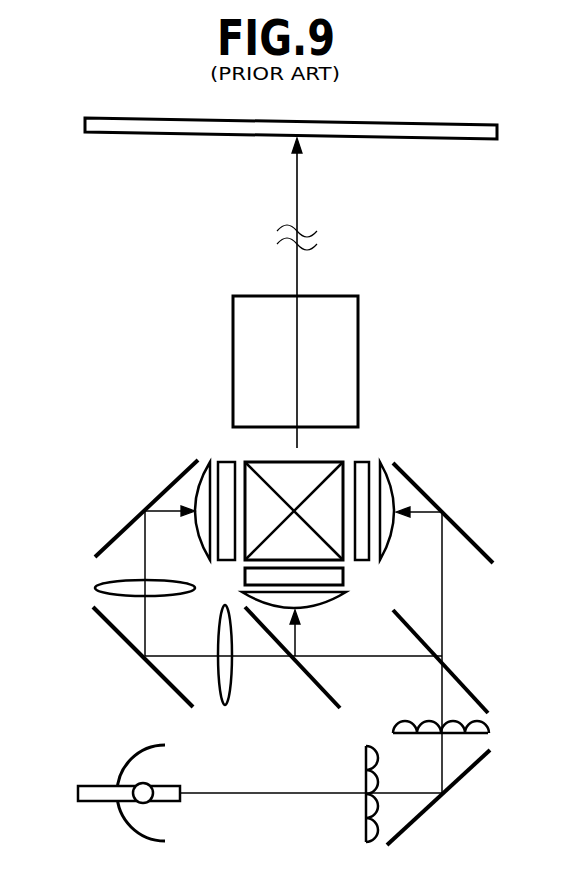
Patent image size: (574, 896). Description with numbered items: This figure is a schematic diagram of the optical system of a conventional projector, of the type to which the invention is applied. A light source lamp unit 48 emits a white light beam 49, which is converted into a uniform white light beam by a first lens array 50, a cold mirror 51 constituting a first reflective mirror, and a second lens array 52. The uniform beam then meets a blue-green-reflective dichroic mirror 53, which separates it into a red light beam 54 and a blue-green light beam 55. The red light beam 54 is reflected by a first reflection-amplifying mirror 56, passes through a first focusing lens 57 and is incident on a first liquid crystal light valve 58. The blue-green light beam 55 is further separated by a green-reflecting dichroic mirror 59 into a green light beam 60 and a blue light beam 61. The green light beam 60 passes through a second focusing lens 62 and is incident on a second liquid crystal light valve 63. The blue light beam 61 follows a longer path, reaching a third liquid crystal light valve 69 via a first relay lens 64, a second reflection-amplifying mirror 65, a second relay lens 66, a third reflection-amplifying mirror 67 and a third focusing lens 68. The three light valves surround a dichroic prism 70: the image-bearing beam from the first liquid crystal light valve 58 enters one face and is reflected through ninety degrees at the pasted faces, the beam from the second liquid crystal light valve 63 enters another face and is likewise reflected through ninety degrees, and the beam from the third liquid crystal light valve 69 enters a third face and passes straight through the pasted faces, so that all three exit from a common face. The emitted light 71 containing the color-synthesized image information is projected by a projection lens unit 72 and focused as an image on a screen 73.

The light source lamp unit 48 is at (97, 801).
The white light beam 49 is at (262, 795).
The first lens array 50 is at (366, 820).
The cold mirror 51 is at (433, 808).
The second lens array 52 is at (489, 734).
The blue-green-reflective dichroic mirror 53 is at (475, 690).
The red light beam 54 is at (445, 623).
The blue-green light beam 55 is at (388, 660).
The first reflection-amplifying mirror 56 is at (478, 542).
The first focusing lens 57 is at (386, 460).
The first liquid crystal light valve 58 is at (364, 460).
The green-reflecting dichroic mirror 59 is at (318, 683).
The green light beam 60 is at (297, 640).
The blue light beam 61 is at (250, 660).
The second focusing lens 62 is at (346, 594).
The second liquid crystal light valve 63 is at (344, 576).
The first relay lens 64 is at (224, 704).
The second reflection-amplifying mirror 65 is at (160, 670).
The second relay lens 66 is at (95, 588).
The third reflection-amplifying mirror 67 is at (111, 541).
The third focusing lens 68 is at (210, 460).
The third liquid crystal light valve 69 is at (227, 460).
The dichroic prism 70 is at (343, 462).
The emitted light 71 is at (308, 272).
The projection lens unit 72 is at (234, 330).
The screen 73 is at (497, 140).